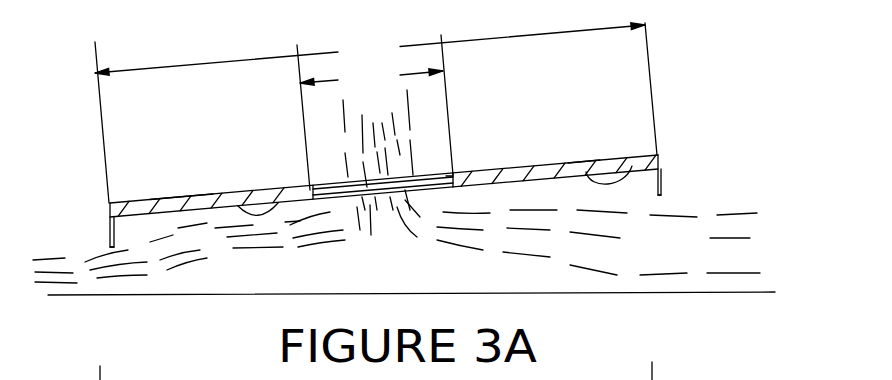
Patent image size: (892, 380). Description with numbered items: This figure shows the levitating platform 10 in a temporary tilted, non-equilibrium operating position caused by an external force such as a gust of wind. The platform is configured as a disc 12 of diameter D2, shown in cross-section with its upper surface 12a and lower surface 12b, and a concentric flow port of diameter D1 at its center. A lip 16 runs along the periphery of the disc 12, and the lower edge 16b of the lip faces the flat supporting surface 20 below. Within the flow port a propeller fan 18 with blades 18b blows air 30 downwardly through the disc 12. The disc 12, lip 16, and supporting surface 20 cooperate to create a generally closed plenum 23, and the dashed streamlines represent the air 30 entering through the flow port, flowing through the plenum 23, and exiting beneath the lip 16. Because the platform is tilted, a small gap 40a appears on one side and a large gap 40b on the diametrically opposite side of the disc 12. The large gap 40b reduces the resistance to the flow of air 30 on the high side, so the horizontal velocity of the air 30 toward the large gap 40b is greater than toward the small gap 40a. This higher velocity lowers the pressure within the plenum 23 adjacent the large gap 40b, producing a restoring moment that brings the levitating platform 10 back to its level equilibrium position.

The levitating platform 10 is at (674, 96).
The disc 12 is at (150, 205).
The upper surface 12a is at (213, 200).
The lower surface 12b is at (286, 195).
The lip 16 is at (110, 229).
The lower edge 16b is at (112, 247).
The propeller fan 18 is at (405, 187).
The blades 18b is at (446, 172).
The supporting surface 20 is at (757, 292).
The plenum 23 is at (380, 227).
The air 30 is at (400, 190).
The small gap 40a is at (115, 287).
The large gap 40b is at (690, 268).
The diameter of concentric flow port D1 is at (375, 112).
The diameter of disc D2 is at (376, 113).